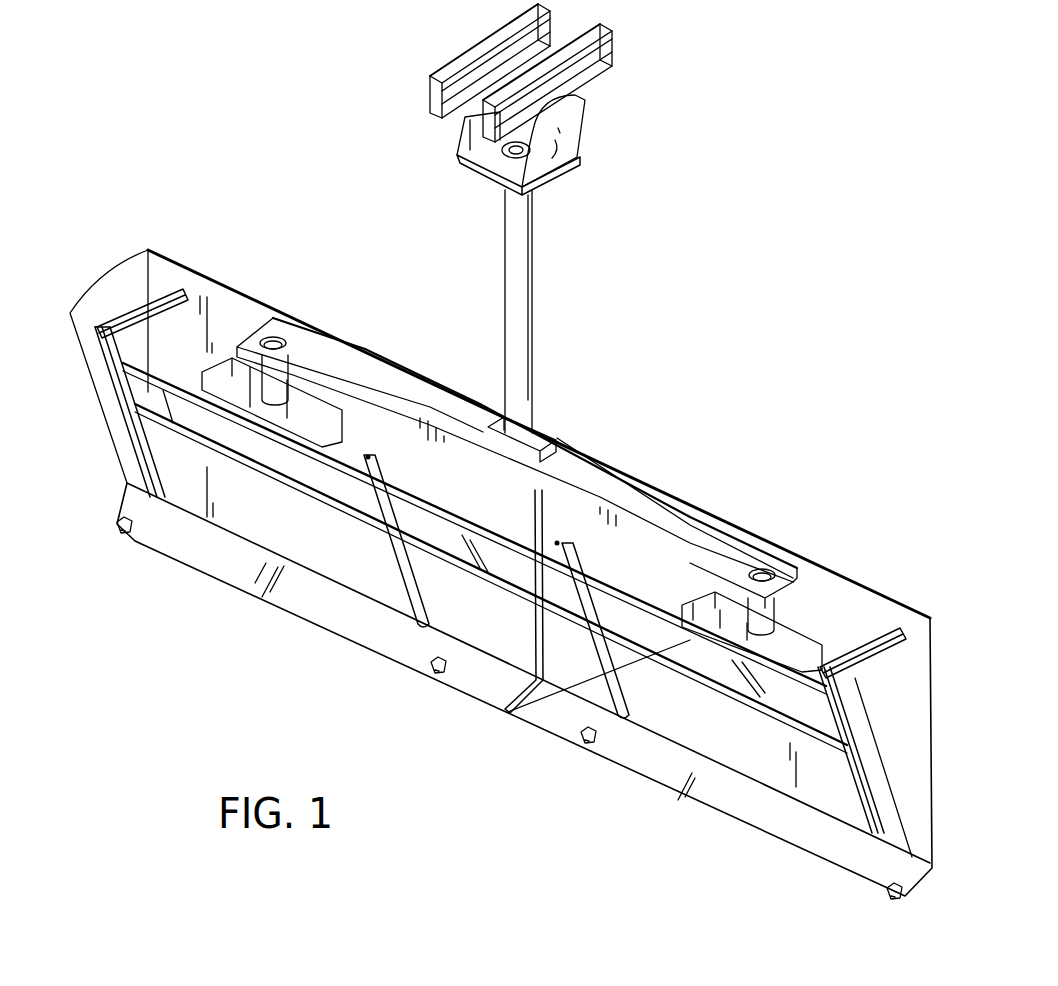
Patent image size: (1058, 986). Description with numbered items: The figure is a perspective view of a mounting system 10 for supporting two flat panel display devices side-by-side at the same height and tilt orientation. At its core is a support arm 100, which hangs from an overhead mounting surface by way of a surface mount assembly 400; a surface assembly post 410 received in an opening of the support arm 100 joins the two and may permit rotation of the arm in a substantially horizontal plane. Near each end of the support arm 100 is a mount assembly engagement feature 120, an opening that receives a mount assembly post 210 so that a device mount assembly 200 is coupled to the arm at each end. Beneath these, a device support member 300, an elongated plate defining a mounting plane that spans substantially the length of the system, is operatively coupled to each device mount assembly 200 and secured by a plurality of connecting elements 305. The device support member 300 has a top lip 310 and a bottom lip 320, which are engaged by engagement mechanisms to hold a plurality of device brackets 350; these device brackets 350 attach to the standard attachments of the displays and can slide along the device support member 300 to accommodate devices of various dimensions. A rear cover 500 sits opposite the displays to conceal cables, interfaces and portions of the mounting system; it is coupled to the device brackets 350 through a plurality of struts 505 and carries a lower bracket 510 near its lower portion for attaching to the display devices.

The mounting system 10 is at (793, 413).
The support arm 100 is at (320, 347).
The mount assembly engagement feature 120 is at (268, 338).
The device mount assembly 200 is at (324, 410).
The mount assembly post 210 is at (210, 380).
The device support member 300 is at (270, 457).
The connecting elements 305 is at (207, 433).
The top lip 310 is at (637, 593).
The bottom lip 320 is at (868, 758).
The device brackets 350 is at (145, 468).
The surface mount assembly 400 is at (628, 88).
The surface assembly post 410 is at (522, 332).
The rear cover 500 is at (922, 648).
The struts 505 is at (142, 312).
The lower bracket 510 is at (128, 538).